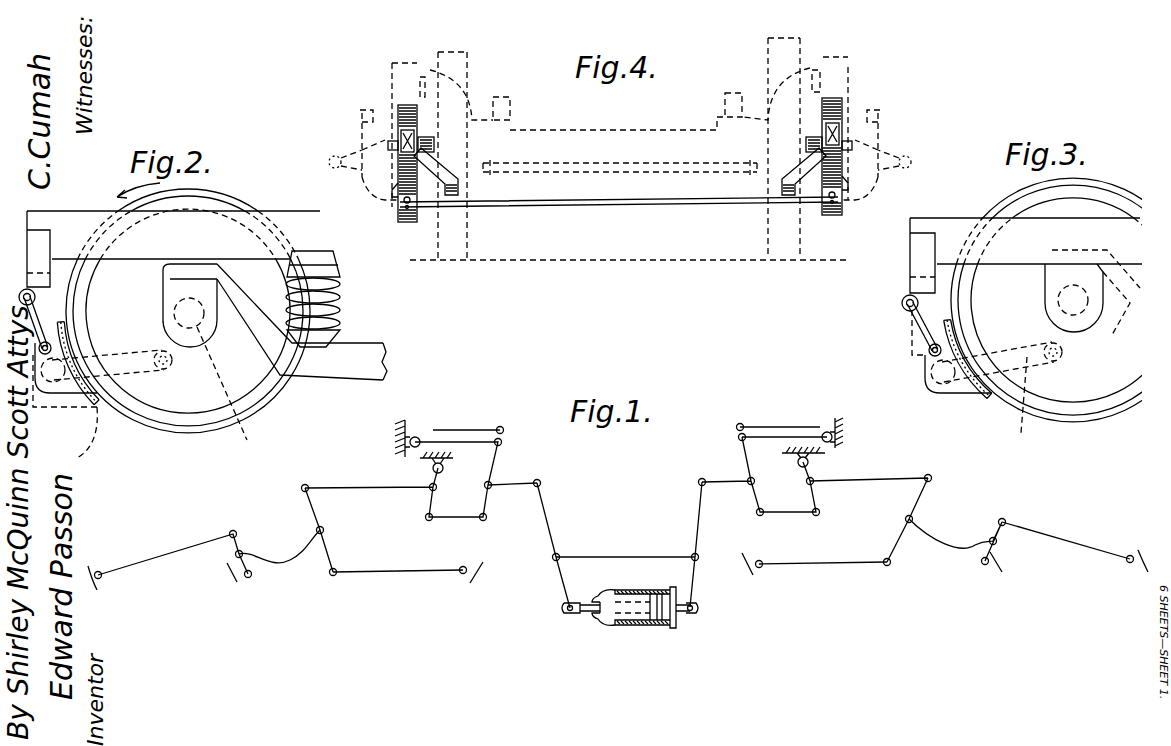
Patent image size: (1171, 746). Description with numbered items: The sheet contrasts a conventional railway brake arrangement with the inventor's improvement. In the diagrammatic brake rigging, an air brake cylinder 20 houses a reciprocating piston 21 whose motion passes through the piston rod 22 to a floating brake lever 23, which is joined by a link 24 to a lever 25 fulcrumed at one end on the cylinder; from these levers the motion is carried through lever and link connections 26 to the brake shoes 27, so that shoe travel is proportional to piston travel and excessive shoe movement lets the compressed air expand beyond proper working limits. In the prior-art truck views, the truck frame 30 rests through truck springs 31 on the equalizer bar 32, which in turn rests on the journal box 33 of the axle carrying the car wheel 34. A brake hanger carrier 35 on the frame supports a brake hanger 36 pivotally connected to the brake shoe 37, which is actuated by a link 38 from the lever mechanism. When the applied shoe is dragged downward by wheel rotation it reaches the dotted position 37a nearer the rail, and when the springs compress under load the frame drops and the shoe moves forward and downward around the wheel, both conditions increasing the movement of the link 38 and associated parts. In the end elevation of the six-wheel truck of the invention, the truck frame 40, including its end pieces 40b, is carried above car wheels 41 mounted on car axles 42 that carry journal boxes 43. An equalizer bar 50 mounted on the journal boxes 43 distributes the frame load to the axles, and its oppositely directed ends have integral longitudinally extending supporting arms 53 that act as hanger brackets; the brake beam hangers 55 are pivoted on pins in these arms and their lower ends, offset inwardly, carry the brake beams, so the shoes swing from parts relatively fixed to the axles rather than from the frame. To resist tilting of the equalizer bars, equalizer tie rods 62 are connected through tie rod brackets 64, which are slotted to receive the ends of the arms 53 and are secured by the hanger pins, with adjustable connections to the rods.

In FIG. 1, the air brake cylinder 20 is at (637, 626).
In FIG. 1, the reciprocating piston 21 is at (656, 593).
In FIG. 1, the piston rod 22 is at (583, 614).
In FIG. 1, the floating brake lever 23 is at (550, 533).
In FIG. 1, the link 24 is at (610, 556).
In FIG. 1, the lever 25 is at (698, 566).
In FIG. 1, the lever and link connections 26 is at (616, 499).
In FIG. 1, the brake shoes 27 is at (1135, 580).
In FIG. 2, the truck frame 30 is at (293, 220).
In FIG. 3, the truck frame 30 is at (955, 227).
In FIG. 2, the truck springs 31 is at (342, 293).
In FIG. 2, the equalizer bar 32 is at (357, 350).
In FIG. 3, the equalizer bar 32 is at (1096, 303).
In FIG. 2, the journal box 33 is at (167, 297).
In FIG. 3, the journal box 33 is at (1052, 278).
In FIG. 2, the car wheel 34 is at (255, 397).
In FIG. 2, the brake hanger carrier 35 is at (40, 298).
In FIG. 3, the brake hanger carrier 35 is at (903, 300).
In FIG. 2, the brake hanger 36 is at (42, 325).
In FIG. 3, the brake hanger 36 is at (926, 327).
In FIG. 2, the brake shoe 37 is at (72, 385).
In FIG. 3, the brake shoe 37 is at (965, 394).
In FIG. 2, the dotted-line position of brake shoe 37a is at (90, 439).
In FIG. 2, the link 38 is at (106, 400).
In FIG. 3, the link 38 is at (985, 389).
In FIG. 4, the truck frame 40 is at (430, 70).
In FIG. 4, the end pieces 40b is at (623, 147).
In FIG. 4, the car wheels 41 is at (453, 53).
In FIG. 4, the car axles 42 is at (560, 177).
In FIG. 2, the car axles 42 is at (228, 393).
In FIG. 4, the journal boxes 43 is at (362, 135).
In FIG. 4, the equalizer bar 50 is at (405, 130).
In FIG. 4, the supporting arms 53 is at (400, 132).
In FIG. 4, the brake beam hangers 55 is at (450, 180).
In FIG. 4, the equalizer tie rods 62 is at (638, 204).
In FIG. 4, the tie rod brackets 64 is at (397, 183).